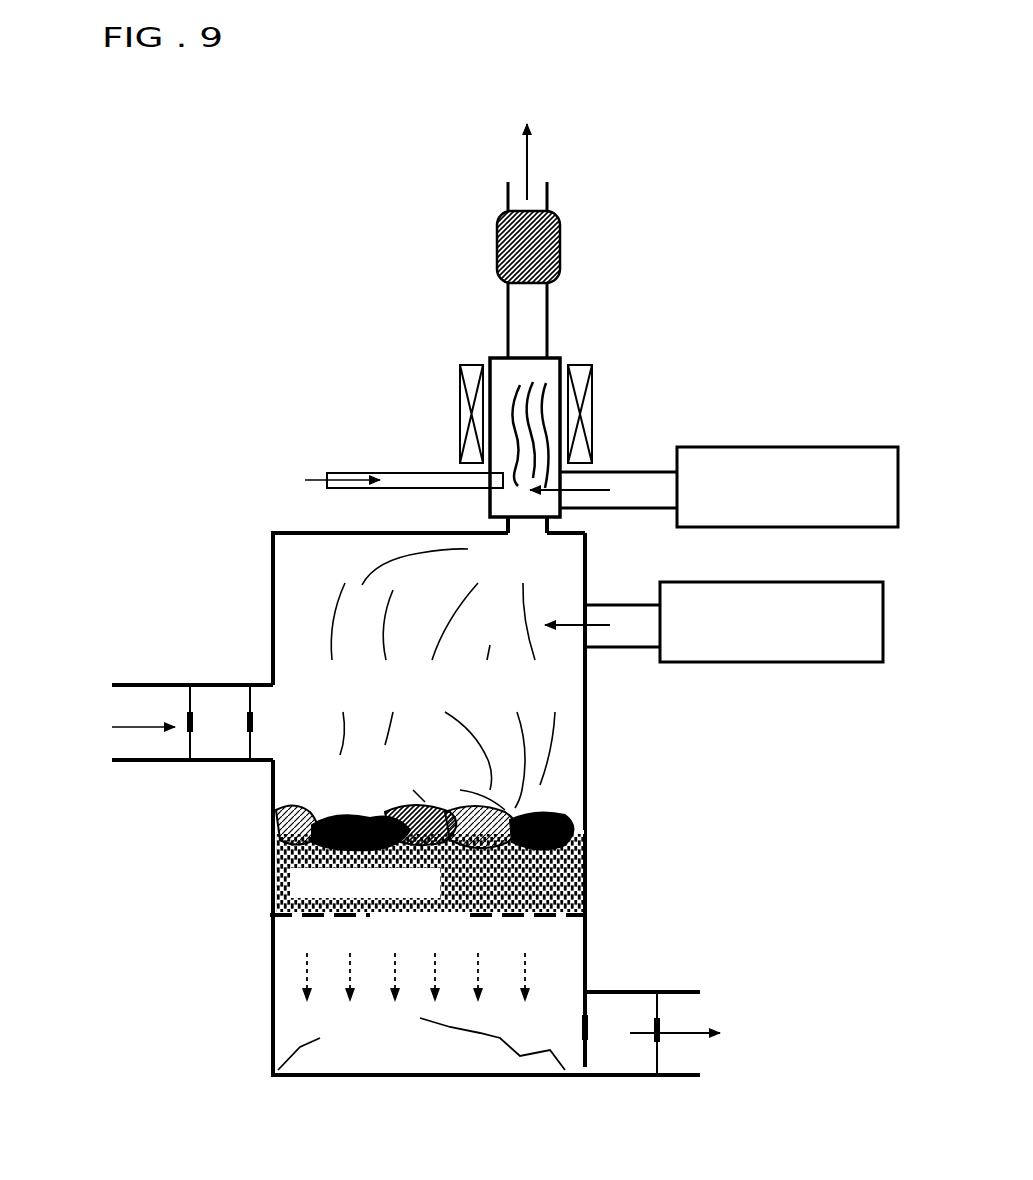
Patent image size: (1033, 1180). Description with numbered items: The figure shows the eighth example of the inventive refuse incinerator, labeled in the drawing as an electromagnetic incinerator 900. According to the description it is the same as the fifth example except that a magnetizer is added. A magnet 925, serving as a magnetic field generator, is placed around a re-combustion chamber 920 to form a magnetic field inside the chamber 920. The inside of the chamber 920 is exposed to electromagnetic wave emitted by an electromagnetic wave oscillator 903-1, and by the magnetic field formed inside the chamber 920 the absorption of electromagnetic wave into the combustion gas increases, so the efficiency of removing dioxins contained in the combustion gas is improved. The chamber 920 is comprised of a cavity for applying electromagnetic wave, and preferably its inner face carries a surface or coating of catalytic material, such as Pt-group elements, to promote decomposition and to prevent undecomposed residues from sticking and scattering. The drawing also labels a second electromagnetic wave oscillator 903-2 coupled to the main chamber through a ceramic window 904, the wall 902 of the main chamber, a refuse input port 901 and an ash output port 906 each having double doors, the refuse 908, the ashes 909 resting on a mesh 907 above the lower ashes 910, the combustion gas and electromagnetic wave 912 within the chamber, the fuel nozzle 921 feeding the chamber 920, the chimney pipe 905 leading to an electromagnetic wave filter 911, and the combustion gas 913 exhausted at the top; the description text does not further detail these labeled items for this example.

The electromagnetic incinerator 900 is at (124, 205).
The refuse input port having double doors 901 is at (150, 678).
The wall 902 is at (588, 731).
The electromagnetic wave oscillator 903-1 is at (718, 446).
The electromagnetic wave oscillator 903-2 is at (694, 580).
The ceramic window 904 is at (517, 555).
The pipe 905 is at (549, 306).
The ash output port having double doors 906 is at (559, 1064).
The mesh 907 is at (588, 906).
The refuse 908 is at (350, 786).
The ashes 909 is at (430, 872).
The ashes 910 is at (421, 1011).
The electromagnetic wave filter 911 is at (558, 216).
The combustion gas and electromagnetic wave 912 is at (341, 667).
The combustion gas 913 is at (507, 141).
The re-combustion chamber 920 is at (328, 437).
The fuel nozzle 921 is at (320, 487).
The magnet 925 is at (594, 376).